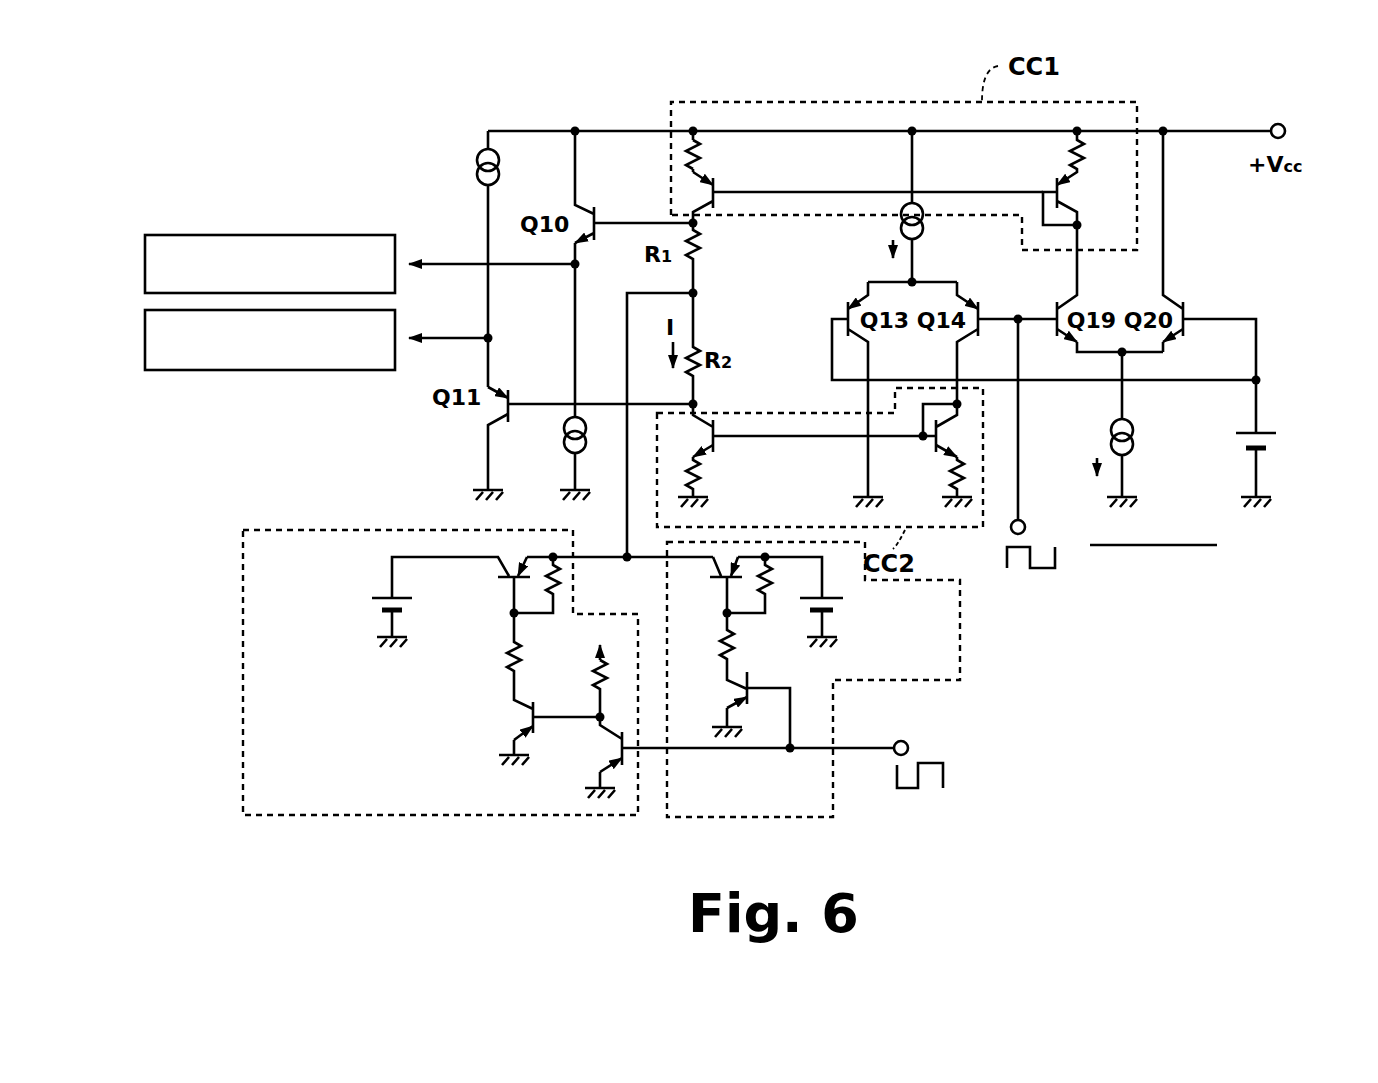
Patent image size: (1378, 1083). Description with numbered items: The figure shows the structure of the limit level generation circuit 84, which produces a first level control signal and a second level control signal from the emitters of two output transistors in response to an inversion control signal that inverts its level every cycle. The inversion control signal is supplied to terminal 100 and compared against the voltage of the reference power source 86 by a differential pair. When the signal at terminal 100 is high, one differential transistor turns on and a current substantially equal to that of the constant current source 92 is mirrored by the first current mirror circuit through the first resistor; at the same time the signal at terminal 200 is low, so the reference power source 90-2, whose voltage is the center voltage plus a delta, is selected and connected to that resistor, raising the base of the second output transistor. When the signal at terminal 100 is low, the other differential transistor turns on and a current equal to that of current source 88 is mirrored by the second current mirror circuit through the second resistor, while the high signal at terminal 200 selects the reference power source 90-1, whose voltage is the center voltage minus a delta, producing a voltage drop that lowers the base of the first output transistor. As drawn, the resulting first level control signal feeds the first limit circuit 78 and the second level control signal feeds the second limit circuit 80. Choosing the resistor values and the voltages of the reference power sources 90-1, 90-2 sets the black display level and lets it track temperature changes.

The first limit circuit 78 is at (273, 371).
The second limit circuit 80 is at (273, 234).
The limit level generation circuit 84 is at (1258, 655).
The reference power source 86 is at (1282, 442).
The current source 88 is at (924, 230).
The reference power source 90-1 is at (962, 626).
The reference power source 90-2 is at (240, 604).
The constant current source 92 is at (1134, 446).
The terminal 100 is at (1026, 527).
The terminal 200 is at (906, 742).